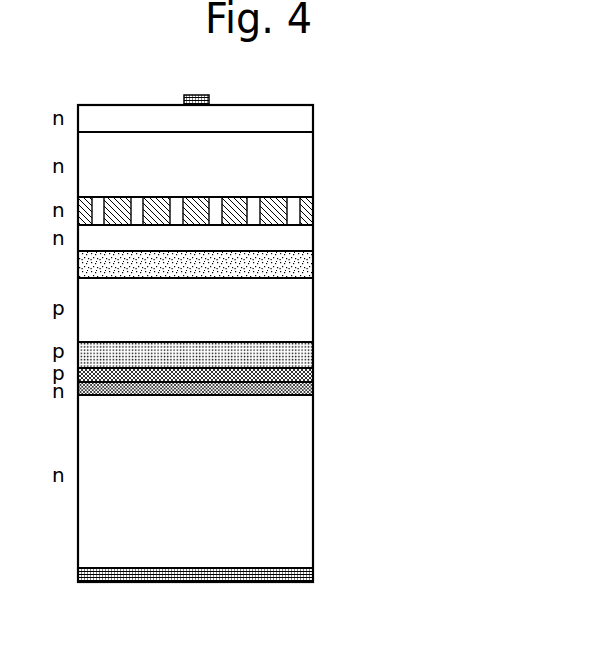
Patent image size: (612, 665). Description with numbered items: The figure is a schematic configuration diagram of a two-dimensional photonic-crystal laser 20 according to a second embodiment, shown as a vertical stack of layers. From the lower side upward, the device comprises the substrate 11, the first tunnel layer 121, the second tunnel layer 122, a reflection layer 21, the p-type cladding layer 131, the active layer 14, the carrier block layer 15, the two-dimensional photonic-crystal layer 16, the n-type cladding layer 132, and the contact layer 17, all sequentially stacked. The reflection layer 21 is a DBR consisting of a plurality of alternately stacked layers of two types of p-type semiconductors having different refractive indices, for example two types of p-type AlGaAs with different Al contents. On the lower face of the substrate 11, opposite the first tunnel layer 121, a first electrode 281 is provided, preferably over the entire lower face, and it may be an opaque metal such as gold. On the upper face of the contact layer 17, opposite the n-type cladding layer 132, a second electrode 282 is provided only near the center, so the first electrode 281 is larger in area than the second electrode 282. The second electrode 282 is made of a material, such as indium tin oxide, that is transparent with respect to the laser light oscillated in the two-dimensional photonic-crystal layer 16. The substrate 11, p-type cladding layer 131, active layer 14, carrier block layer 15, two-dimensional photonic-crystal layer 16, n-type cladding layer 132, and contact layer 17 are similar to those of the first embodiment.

The contact layer 17 is at (300, 123).
The n-type cladding layer 132 is at (300, 168).
The two-dimensional photonic-crystal layer 16 is at (310, 210).
The carrier block layer 15 is at (298, 242).
The active layer 14 is at (300, 265).
The p-type cladding layer 131 is at (299, 313).
The reflection layer 21 is at (302, 352).
The second tunnel layer 122 is at (310, 370).
The first tunnel layer 121 is at (312, 393).
The substrate 11 is at (300, 475).
The first electrode 281 is at (312, 578).
The second electrode 282 is at (197, 95).
The two-dimensional photonic-crystal laser 20 is at (423, 567).